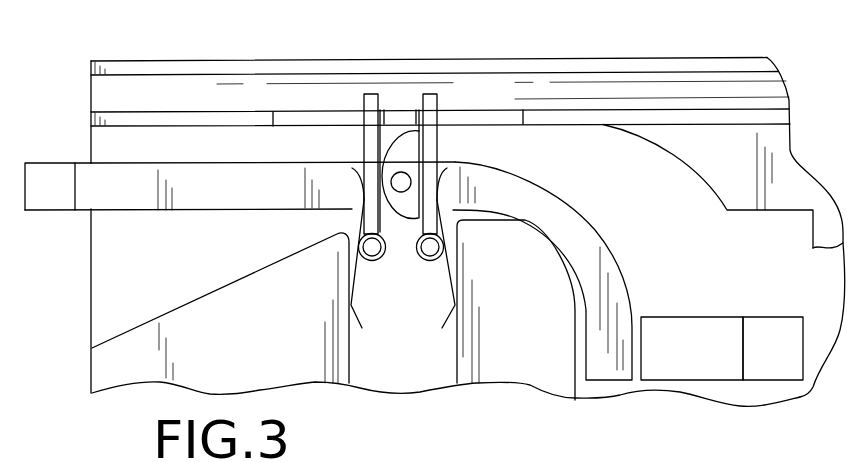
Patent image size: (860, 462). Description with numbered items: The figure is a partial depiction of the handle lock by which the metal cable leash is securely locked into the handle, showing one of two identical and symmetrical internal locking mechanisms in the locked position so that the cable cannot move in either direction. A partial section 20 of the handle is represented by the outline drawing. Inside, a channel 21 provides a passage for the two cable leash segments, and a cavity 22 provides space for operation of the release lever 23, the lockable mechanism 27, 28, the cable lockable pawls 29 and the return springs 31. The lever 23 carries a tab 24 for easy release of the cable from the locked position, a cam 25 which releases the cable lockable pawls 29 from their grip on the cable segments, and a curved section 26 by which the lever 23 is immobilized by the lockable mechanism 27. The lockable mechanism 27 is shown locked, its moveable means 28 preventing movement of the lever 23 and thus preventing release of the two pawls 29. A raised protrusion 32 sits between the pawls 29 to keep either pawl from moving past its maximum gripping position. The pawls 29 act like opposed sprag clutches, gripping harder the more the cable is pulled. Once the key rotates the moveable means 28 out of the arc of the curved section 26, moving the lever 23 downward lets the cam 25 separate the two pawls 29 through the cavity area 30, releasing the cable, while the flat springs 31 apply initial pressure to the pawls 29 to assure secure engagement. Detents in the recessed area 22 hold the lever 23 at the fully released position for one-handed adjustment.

The partial section of handle means 20 is at (197, 66).
The channel 21 is at (543, 88).
The cavity 22 is at (110, 145).
The release lever 23 is at (211, 197).
The tab 24 is at (42, 196).
The cam 25 is at (395, 218).
The curved section 26 is at (590, 240).
The lockable mechanism 27 is at (765, 367).
The moveable means 28 is at (690, 367).
The cable lockable pawls 29 is at (369, 99).
The cavity area 30 is at (320, 117).
The return springs 31 is at (358, 193).
The raised protrusion 32 is at (405, 117).